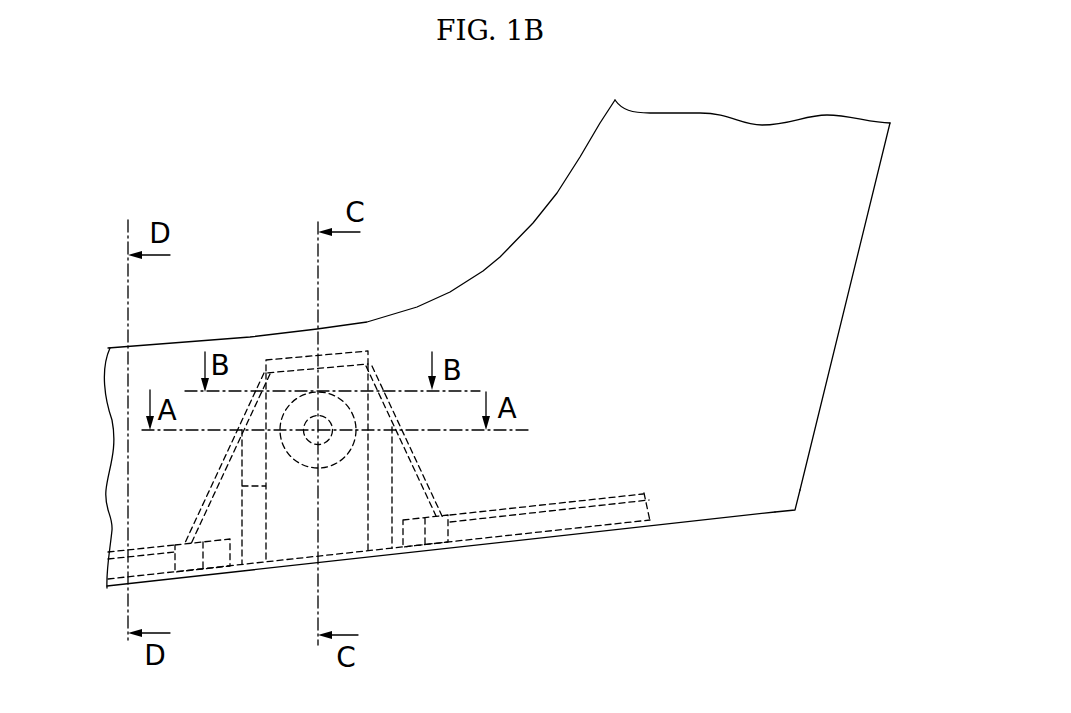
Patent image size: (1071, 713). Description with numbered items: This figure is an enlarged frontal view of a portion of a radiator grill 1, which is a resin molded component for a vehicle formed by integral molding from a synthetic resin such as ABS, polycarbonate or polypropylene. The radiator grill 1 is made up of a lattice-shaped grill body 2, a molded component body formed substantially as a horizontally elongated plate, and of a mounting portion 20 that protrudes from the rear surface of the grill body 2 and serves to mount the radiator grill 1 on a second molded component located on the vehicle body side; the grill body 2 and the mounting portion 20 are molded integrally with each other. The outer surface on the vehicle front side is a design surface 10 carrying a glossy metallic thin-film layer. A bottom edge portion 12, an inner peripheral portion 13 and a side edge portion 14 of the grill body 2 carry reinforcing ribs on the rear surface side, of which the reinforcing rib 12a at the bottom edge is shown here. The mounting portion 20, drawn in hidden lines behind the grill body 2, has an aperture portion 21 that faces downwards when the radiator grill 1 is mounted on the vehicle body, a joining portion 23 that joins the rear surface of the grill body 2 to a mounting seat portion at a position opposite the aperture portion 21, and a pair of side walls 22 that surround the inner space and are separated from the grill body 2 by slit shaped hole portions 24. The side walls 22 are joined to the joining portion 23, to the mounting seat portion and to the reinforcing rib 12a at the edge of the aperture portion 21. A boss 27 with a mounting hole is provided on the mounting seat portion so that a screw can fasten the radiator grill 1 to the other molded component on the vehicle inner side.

The radiator grill 1 is at (497, 369).
The grill body 2 is at (836, 379).
The design surface 10 is at (497, 358).
The bottom edge portion 12 is at (733, 518).
The reinforcing rib 12a is at (558, 523).
The inner peripheral portion 13 is at (477, 273).
The side edge portion 14 is at (800, 490).
The mounting portion 20 is at (379, 456).
The aperture portion 21 is at (293, 552).
The side wall 22 is at (240, 487).
The joining portion 23 is at (290, 357).
The slit shaped hole portion 24 is at (216, 538).
The boss 27 is at (330, 397).